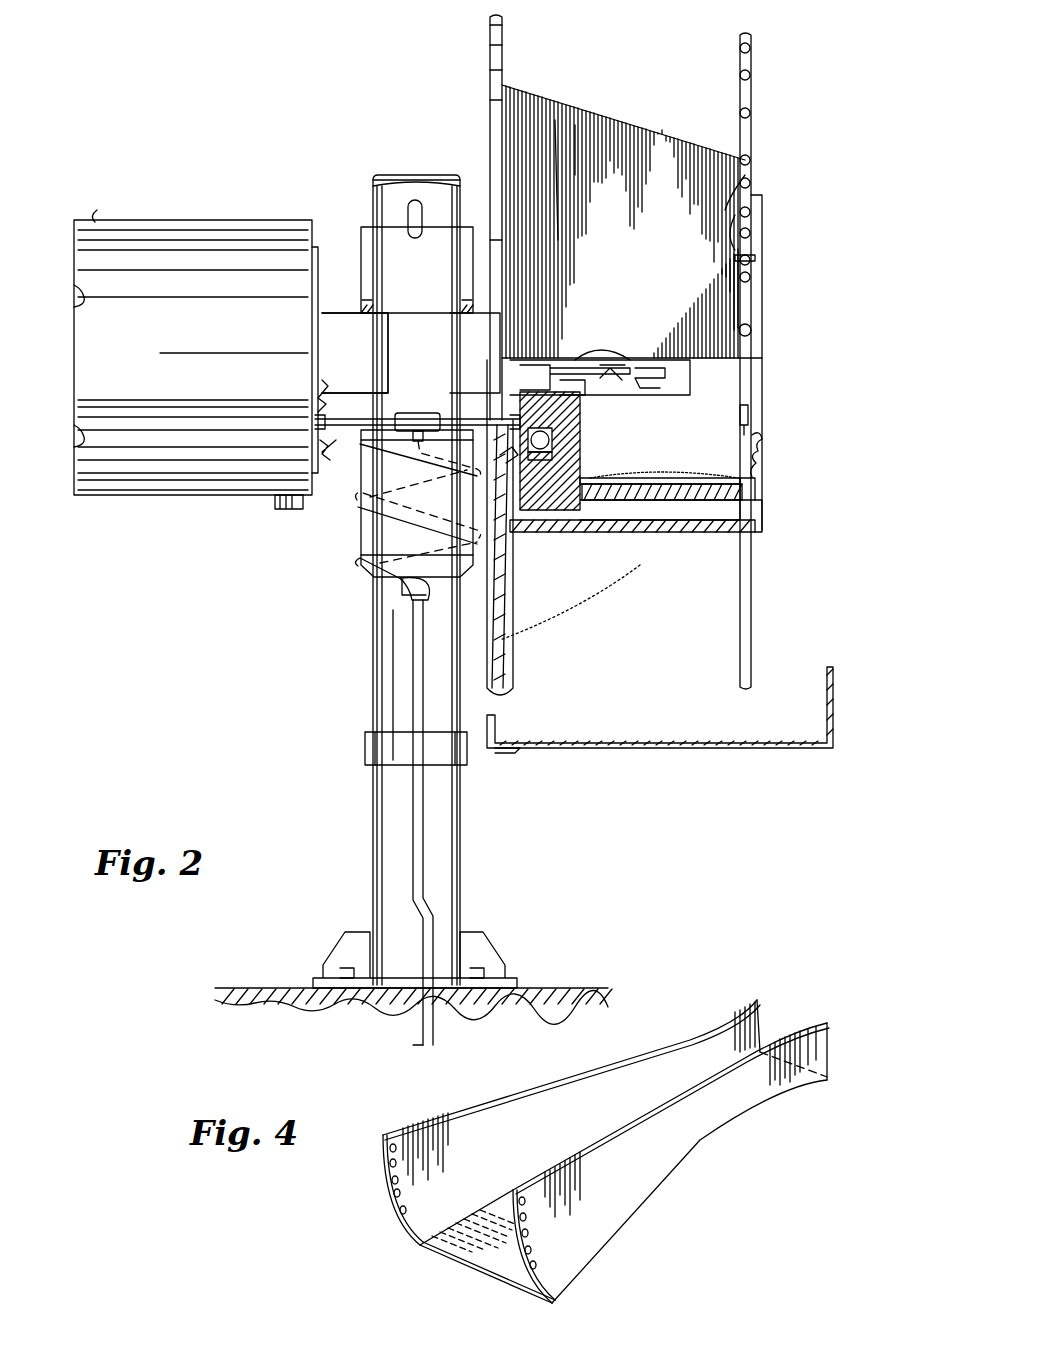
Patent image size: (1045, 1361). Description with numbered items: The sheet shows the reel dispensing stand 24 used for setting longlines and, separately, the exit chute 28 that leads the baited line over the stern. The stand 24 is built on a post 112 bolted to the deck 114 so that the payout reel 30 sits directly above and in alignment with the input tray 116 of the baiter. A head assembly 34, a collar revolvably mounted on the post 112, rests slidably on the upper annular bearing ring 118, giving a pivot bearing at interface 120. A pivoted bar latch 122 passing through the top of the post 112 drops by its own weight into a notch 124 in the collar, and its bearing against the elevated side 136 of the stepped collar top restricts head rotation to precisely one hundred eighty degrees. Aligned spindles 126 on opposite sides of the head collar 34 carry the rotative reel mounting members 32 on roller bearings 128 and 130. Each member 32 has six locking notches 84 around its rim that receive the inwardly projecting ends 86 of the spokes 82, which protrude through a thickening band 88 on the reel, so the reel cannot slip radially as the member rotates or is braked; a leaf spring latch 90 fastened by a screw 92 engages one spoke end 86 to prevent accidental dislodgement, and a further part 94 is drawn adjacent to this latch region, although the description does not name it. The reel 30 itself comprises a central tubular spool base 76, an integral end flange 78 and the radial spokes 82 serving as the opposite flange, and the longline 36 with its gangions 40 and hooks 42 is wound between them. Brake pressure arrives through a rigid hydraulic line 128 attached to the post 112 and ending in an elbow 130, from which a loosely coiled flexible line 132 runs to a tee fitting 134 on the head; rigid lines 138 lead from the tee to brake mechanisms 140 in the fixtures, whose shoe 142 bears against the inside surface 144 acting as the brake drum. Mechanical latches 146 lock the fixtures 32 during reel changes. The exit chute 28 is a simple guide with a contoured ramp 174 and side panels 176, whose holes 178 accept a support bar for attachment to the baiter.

In FIG. 2, the dispensing stand 24 is at (365, 127).
In FIG. 4, the exit chute 28 is at (440, 1101).
In FIG. 2, the line storage spool 30 is at (604, 74).
In FIG. 2, the reel mounting member 32 is at (172, 496).
In FIG. 2, the head assembly 34 is at (362, 250).
In FIG. 2, the longline 36 is at (688, 140).
In FIG. 2, the gangion 40 is at (763, 228).
In FIG. 2, the hook 42 is at (756, 258).
In FIG. 2, the spool base 76 is at (618, 538).
In FIG. 2, the end flange 78 is at (507, 656).
In FIG. 2, the spokes 82 is at (753, 176).
In FIG. 2, the locking notches 84 is at (92, 222).
In FIG. 2, the spoke ends 86 is at (750, 468).
In FIG. 2, the thickening band 88 is at (712, 521).
In FIG. 2, the leaf spring latch 90 is at (660, 482).
In FIG. 2, the screw 92 is at (610, 479).
In FIG. 2, the spacer 94 is at (740, 480).
In FIG. 2, the post 112 is at (418, 175).
In FIG. 2, the deck 114 is at (272, 988).
In FIG. 2, the input tray 116 is at (598, 748).
In FIG. 2, the upper annular bearing ring 118 is at (360, 548).
In FIG. 2, the interface 120 is at (375, 539).
In FIG. 2, the bar latch 122 is at (417, 208).
In FIG. 2, the notch 124 is at (395, 270).
In FIG. 2, the spindles 126 is at (645, 362).
In FIG. 2, the rigid hydraulic line 128 is at (520, 378).
In FIG. 2, the elbow 130 is at (400, 608).
In FIG. 2, the flexible hydraulic line 132 is at (380, 584).
In FIG. 2, the tee fitting 134 is at (417, 443).
In FIG. 2, the elevated side 136 is at (440, 212).
In FIG. 2, the hydraulic lines 138 is at (440, 407).
In FIG. 2, the brake mechanism 140 is at (555, 434).
In FIG. 2, the shoe 142 is at (531, 451).
In FIG. 2, the inside surface 144 is at (552, 455).
In FIG. 2, the mechanical latches 146 is at (330, 462).
In FIG. 4, the contoured ramp 174 is at (482, 1267).
In FIG. 4, the side panels 176 is at (544, 1087).
In FIG. 4, the holes 178 is at (387, 1193).